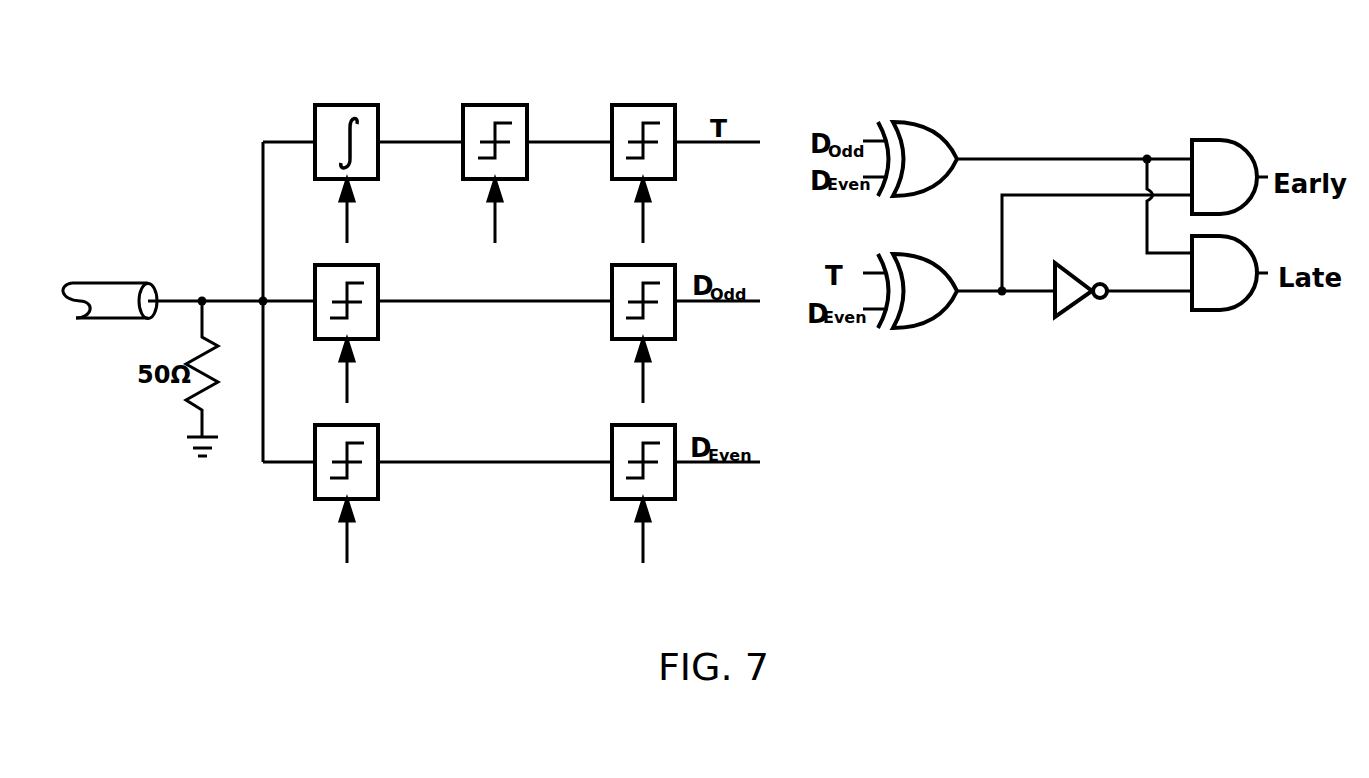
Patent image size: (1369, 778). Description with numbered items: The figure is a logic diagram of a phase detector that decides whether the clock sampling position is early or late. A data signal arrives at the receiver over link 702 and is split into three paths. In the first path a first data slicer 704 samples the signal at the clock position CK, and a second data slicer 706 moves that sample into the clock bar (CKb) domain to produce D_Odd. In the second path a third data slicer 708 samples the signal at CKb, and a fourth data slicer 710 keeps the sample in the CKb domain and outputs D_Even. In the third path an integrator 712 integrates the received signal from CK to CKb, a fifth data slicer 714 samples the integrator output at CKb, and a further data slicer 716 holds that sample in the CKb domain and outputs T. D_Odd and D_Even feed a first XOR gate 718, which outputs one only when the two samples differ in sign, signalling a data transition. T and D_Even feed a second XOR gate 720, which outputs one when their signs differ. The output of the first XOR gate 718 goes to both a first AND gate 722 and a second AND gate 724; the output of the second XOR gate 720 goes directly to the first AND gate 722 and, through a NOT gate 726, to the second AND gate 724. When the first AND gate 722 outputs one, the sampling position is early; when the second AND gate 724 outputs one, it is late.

The link 702 is at (108, 280).
The first data slicer 704 is at (378, 322).
The second data slicer 706 is at (612, 320).
The third data slicer 708 is at (378, 478).
The fourth data slicer 710 is at (612, 480).
The integrator 712 is at (348, 105).
The fifth data slicer 714 is at (495, 105).
The fifth data slicer 716 is at (643, 105).
The first exclusive OR (XOR) gate 718 is at (923, 123).
The second XOR gate 720 is at (930, 328).
The first AND gate 722 is at (1211, 140).
The second AND gate 724 is at (1217, 310).
The NOT gate (inverter) 726 is at (1055, 317).